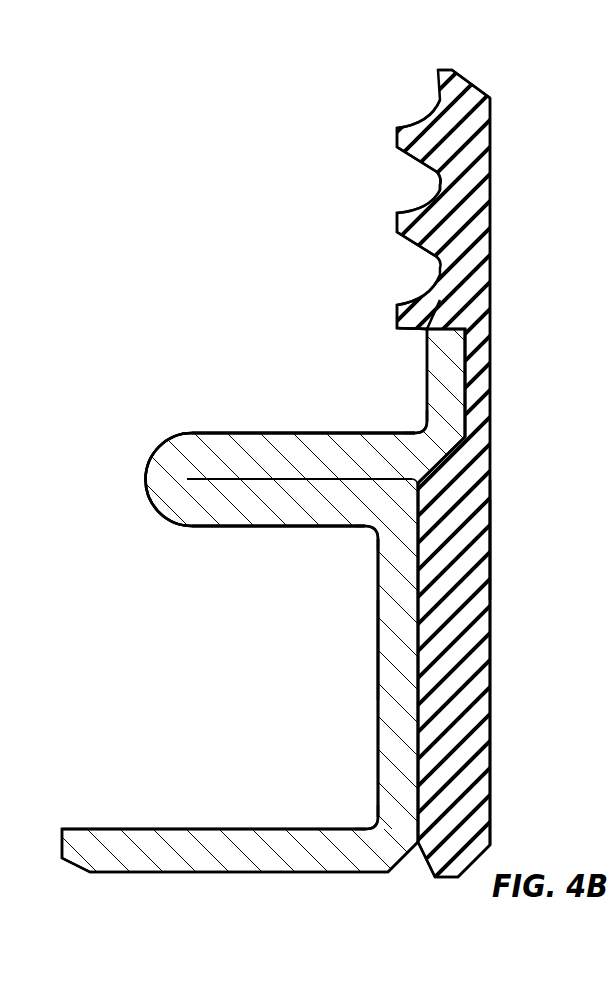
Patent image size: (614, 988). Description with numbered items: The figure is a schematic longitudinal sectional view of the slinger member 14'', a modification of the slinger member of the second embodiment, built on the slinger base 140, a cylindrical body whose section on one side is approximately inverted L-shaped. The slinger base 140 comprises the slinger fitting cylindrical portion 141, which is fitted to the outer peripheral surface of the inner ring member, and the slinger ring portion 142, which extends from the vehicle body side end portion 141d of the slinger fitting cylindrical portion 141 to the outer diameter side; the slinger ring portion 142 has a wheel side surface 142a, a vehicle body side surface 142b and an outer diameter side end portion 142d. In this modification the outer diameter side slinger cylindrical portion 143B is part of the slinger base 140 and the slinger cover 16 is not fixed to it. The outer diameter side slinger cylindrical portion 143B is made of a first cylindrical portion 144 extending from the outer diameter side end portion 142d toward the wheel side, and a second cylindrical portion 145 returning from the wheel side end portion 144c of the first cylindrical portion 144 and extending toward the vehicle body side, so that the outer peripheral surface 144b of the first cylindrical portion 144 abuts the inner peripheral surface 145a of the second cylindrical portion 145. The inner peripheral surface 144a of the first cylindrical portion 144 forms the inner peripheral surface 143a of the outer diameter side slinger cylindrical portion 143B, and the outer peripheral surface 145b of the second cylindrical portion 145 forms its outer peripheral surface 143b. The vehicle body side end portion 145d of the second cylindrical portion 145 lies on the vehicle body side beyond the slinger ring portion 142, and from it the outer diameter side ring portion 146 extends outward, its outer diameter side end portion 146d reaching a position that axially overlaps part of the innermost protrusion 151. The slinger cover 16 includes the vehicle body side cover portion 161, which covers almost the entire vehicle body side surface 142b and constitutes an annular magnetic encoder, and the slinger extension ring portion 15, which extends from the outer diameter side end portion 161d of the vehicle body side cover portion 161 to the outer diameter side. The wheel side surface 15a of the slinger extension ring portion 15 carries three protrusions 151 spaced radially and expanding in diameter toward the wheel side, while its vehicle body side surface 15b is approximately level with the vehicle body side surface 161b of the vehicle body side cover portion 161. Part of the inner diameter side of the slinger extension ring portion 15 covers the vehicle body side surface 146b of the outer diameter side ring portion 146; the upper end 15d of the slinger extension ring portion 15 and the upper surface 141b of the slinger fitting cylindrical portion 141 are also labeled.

The slinger member 14'' is at (493, 608).
The slinger base 140 is at (421, 555).
The slinger fitting cylindrical portion 141 is at (250, 848).
The upper surface of bottom plate portion 141b is at (167, 829).
The vehicle body side end portion of the slinger fitting cylindrical portion 141d is at (377, 843).
The slinger ring portion 142 is at (400, 690).
The wheel side surface of the slinger ring portion 142a is at (378, 705).
The vehicle body side surface of the slinger ring portion 142b is at (424, 650).
The outer diameter side end portion of the slinger ring portion 142d is at (390, 508).
The outer diameter side slinger cylindrical portion 143B is at (152, 434).
The inner peripheral surface of the outer diameter side slinger cylindrical portion 143a is at (228, 527).
The outer peripheral surface of the outer diameter side slinger cylindrical portion 143b is at (303, 432).
The first cylindrical portion 144 is at (283, 510).
The inner peripheral surface of the first cylindrical portion 144a is at (228, 527).
The outer peripheral surface of the first cylindrical portion 144b is at (222, 477).
The wheel side end portion of the first cylindrical portion 144c is at (167, 505).
The second cylindrical portion 145 is at (318, 455).
The inner peripheral surface of the second cylindrical portion 145a is at (247, 483).
The outer peripheral surface of the second cylindrical portion 145b is at (303, 432).
The vehicle body side end portion of the second cylindrical portion 145d is at (424, 447).
The outer diameter side ring portion 146 is at (456, 352).
The vehicle body side surface of the outer diameter side ring portion 146b is at (472, 378).
The outer diameter side end portion of the outer diameter side ring portion 146d is at (430, 320).
The slinger extension ring portion 15 is at (474, 268).
The wheel side surface of the slinger extension ring portion 15a is at (435, 188).
The vehicle body side surface of the slinger extension ring portion 15b is at (490, 215).
The upper end of plate member 15d is at (452, 70).
The protrusion 151 is at (400, 143).
The slinger cover 16 is at (490, 583).
The vehicle body side cover portion 161 is at (484, 723).
The vehicle body side surface of the vehicle body side cover portion 161b is at (490, 511).
The outer diameter side end portion of the vehicle body side cover portion 161d is at (470, 470).